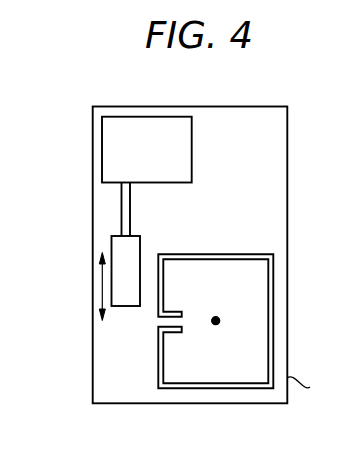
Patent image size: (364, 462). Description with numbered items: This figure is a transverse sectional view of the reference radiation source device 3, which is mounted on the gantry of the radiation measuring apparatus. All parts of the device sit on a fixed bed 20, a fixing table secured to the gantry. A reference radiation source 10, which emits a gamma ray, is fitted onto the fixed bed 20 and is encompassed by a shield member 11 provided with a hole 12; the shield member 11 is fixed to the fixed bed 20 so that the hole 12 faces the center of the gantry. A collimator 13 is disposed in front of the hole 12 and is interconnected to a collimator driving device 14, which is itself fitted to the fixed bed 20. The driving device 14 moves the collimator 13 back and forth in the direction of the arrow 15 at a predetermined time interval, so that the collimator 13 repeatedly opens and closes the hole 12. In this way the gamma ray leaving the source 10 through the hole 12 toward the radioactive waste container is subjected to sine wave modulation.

The reference radiation source device 3 is at (328, 400).
The reference radiation source 10 is at (218, 325).
The shield member 11 is at (273, 270).
The hole 12 is at (157, 322).
The collimator 13 is at (120, 245).
The collimator driving device 14 is at (108, 145).
The arrow 15 is at (101, 281).
The fixed bed 20 is at (140, 407).